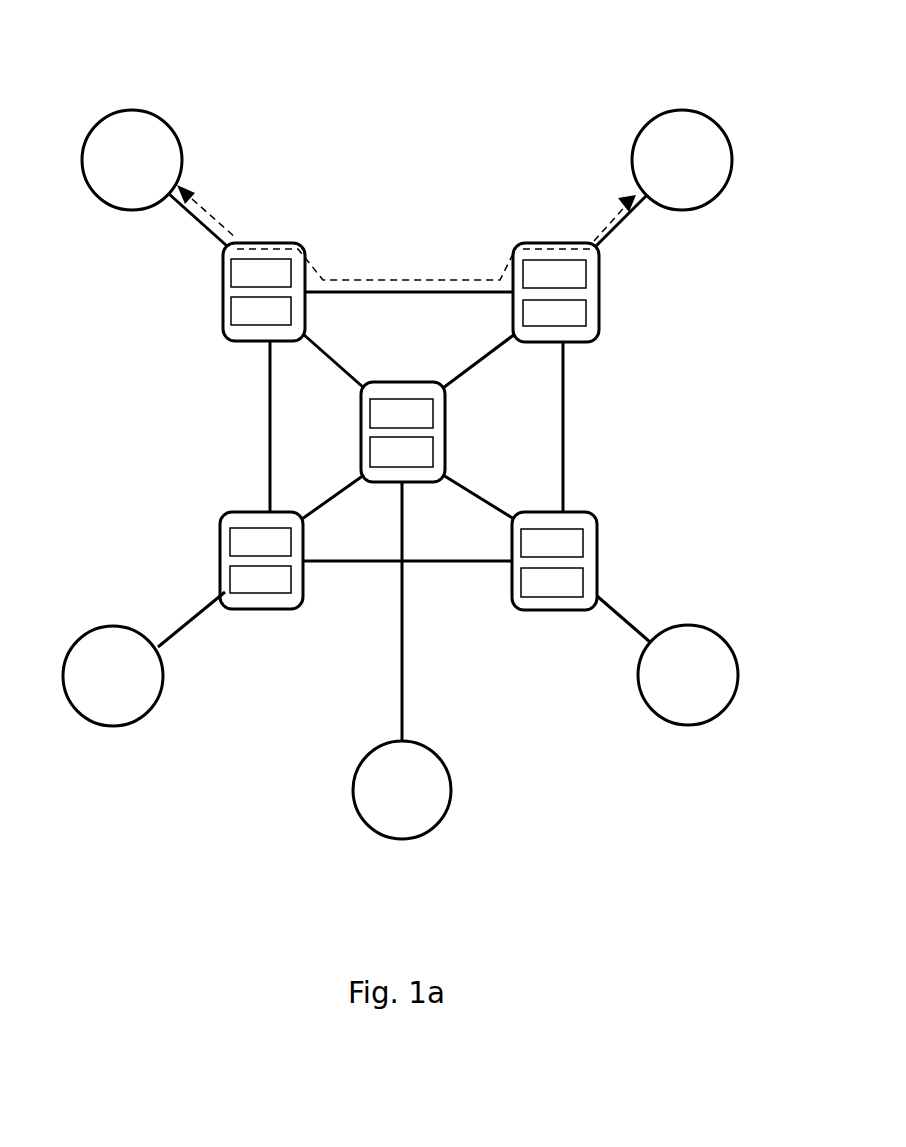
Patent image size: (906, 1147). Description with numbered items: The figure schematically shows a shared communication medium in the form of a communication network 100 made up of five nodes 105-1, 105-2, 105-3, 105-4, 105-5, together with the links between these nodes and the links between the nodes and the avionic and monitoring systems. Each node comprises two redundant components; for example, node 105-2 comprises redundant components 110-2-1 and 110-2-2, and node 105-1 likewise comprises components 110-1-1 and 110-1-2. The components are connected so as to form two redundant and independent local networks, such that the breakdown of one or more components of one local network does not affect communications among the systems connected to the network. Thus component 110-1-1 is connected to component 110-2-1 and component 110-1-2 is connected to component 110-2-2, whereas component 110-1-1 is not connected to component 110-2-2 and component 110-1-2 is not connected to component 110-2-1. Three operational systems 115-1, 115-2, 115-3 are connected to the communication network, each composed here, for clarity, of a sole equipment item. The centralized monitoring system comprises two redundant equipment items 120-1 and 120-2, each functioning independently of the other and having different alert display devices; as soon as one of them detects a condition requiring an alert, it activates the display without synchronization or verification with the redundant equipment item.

The communication network 100 is at (414, 99).
The node 105-1 is at (215, 249).
The node 105-2 is at (595, 252).
The node 105-3 is at (220, 557).
The node 105-4 is at (597, 563).
The node 105-5 is at (445, 437).
The redundant component 110-1-1 is at (223, 272).
The redundant component 110-1-2 is at (223, 310).
The redundant component 110-2-1 is at (597, 272).
The redundant component 110-2-2 is at (597, 312).
The operational system 115-1 is at (127, 110).
The operational system 115-2 is at (712, 120).
The operational system 115-3 is at (379, 836).
The equipment item of the monitoring system 120-1 is at (90, 723).
The equipment item of the monitoring system 120-2 is at (713, 722).